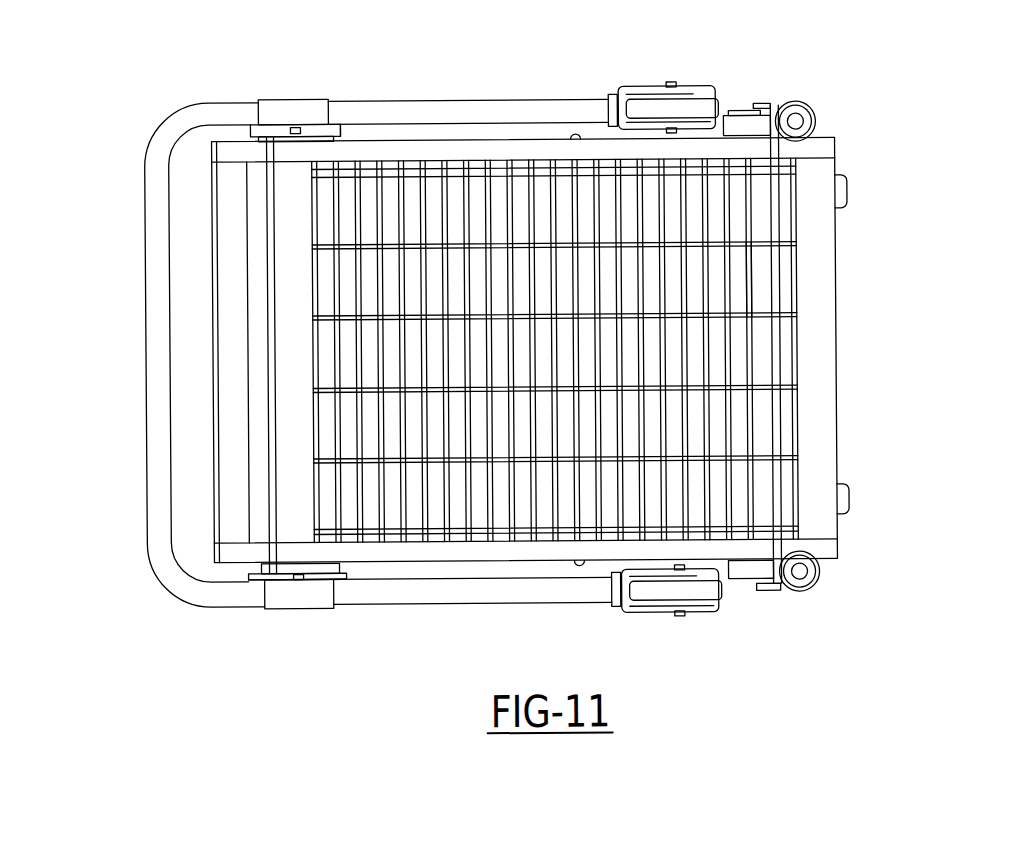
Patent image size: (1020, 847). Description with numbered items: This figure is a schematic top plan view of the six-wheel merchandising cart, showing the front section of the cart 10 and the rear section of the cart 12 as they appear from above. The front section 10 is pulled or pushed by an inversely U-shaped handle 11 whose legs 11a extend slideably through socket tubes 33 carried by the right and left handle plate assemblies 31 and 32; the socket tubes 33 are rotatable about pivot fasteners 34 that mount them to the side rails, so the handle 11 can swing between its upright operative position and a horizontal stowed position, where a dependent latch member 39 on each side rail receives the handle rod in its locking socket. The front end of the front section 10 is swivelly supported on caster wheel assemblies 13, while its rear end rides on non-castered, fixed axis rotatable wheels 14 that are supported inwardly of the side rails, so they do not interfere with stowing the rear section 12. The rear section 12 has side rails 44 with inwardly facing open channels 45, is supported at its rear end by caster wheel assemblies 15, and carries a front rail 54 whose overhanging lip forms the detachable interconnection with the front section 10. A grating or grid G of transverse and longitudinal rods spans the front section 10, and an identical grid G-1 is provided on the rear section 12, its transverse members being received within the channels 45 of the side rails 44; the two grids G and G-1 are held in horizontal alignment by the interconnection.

The front section of the cart 10 is at (847, 128).
The handle 11 is at (145, 417).
The legs 11a is at (530, 103).
The rear section of the cart 12 is at (457, 190).
The caster wheel assemblies 13 is at (705, 90).
The fixed axis rotatable wheels 14 is at (847, 177).
The caster wheel assemblies 15 is at (783, 101).
The right handle plate assembly 31 is at (262, 595).
The left handle plate assembly 32 is at (346, 122).
The socket tubes 33 is at (273, 104).
The pivot fasteners 34 is at (306, 128).
The latch member 39 is at (588, 578).
The side rails 44 is at (700, 147).
The open channels 45 is at (820, 408).
The front rail 54 is at (305, 200).
The grid G is at (743, 372).
The grid G-1 is at (756, 287).